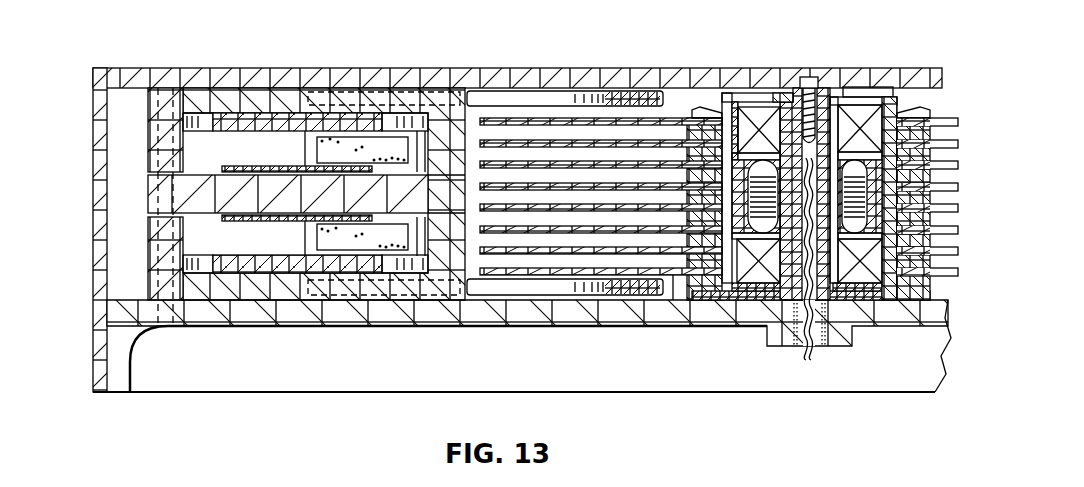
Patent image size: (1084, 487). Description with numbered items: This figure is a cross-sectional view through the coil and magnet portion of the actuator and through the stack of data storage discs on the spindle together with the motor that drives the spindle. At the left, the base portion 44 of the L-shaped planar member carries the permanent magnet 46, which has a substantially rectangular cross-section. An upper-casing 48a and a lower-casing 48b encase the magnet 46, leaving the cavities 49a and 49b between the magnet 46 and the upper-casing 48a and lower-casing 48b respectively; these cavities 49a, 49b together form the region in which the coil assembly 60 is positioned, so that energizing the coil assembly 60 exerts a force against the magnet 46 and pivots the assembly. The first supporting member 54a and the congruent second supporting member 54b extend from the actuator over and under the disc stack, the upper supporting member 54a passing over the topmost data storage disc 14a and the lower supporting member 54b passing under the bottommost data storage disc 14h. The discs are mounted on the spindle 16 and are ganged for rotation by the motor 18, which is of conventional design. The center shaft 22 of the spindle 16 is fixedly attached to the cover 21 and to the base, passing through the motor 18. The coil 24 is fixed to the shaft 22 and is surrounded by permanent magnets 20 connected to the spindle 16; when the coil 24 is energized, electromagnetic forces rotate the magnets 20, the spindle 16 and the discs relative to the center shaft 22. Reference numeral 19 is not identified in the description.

The data storage disc 14a is at (674, 117).
The data storage disc 14h is at (672, 302).
The spindle 16 is at (892, 87).
The motor 18 is at (917, 108).
The motor 19 is at (867, 201).
The permanent magnets 20 is at (757, 197).
The cover 21 is at (925, 68).
The center shaft 22 is at (826, 87).
The coil 24 is at (763, 232).
The base portion 44 is at (152, 197).
The permanent magnet 46 is at (283, 166).
The upper-casing 48a is at (153, 120).
The lower-casing 48b is at (152, 252).
The cavity 49a is at (196, 131).
The cavity 49b is at (197, 255).
The first supporting member 54a is at (653, 97).
The second supporting member 54b is at (627, 291).
The coil assembly 60 is at (318, 242).